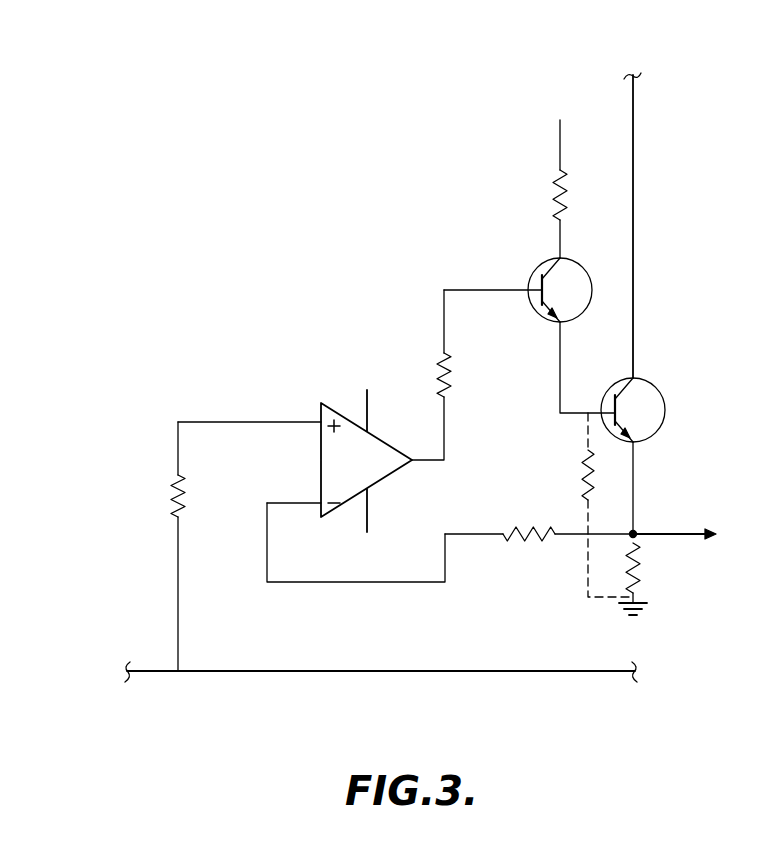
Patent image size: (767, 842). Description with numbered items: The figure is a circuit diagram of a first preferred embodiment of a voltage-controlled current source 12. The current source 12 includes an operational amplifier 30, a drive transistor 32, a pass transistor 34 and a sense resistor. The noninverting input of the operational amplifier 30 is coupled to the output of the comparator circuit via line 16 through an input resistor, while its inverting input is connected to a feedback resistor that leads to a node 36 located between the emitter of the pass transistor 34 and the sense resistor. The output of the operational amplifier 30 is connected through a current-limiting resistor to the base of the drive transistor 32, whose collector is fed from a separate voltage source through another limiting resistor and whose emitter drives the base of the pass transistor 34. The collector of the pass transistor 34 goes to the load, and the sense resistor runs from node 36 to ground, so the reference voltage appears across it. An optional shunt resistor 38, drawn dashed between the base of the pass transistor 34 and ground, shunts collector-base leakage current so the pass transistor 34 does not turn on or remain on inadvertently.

The current source 12 is at (312, 141).
The line 16 is at (158, 671).
The operational amplifier 30 is at (321, 408).
The drive transistor 32 is at (573, 267).
The pass transistor 34 is at (647, 386).
The node 36 is at (637, 532).
The shunt resistor 38 is at (582, 476).